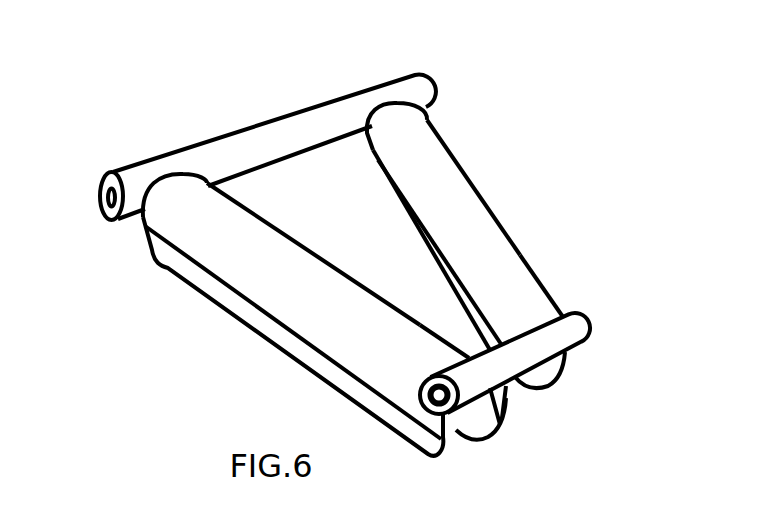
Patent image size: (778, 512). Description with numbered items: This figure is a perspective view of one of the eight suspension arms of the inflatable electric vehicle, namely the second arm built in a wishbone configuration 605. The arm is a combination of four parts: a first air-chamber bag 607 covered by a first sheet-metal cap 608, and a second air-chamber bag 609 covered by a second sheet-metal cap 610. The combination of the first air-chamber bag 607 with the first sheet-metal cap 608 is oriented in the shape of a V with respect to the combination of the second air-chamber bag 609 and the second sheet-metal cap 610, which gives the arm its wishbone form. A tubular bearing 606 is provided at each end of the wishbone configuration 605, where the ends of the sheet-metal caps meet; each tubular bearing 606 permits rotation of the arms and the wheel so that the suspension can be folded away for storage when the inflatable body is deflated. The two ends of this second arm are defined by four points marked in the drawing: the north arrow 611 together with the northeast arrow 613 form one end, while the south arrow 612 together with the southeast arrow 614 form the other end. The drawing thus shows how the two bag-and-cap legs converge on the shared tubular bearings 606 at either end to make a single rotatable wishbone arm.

The wishbone configuration 605 is at (551, 168).
The tubular bearing 606 is at (263, 147).
The first air-chamber bag 607 is at (460, 428).
The first sheet-metal cap 608 is at (173, 215).
The second air-chamber bag 609 is at (540, 372).
The second sheet-metal cap 610 is at (411, 128).
The north arrow 611 is at (162, 165).
The south arrow 612 is at (460, 350).
The northeast arrow 613 is at (397, 92).
The southeast arrow 614 is at (533, 312).